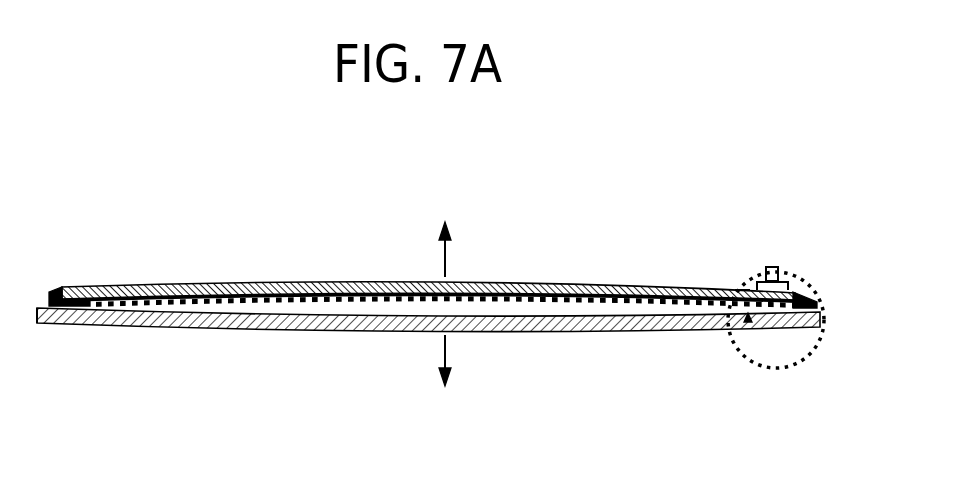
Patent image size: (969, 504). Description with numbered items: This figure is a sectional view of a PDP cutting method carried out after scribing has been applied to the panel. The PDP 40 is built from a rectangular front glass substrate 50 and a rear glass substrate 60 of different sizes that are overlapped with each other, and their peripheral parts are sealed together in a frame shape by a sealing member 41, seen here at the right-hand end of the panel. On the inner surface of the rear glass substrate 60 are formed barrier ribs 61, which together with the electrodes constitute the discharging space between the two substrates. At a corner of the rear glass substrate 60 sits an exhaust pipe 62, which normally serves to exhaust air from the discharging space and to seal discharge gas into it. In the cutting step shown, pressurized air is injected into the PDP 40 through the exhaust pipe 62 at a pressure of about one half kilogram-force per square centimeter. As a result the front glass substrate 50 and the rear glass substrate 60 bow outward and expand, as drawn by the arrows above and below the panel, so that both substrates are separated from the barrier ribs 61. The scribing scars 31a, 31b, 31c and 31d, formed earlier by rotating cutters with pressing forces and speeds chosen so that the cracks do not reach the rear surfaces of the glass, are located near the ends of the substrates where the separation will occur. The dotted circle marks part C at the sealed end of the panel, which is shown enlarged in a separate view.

The PDP 40 is at (275, 263).
The front glass substrate 50 is at (325, 330).
The rear glass substrate 60 is at (393, 282).
The barrier ribs 61 is at (517, 282).
The exhaust pipe 62 is at (777, 268).
The sealing member 41 is at (815, 297).
The scribing scar 31a is at (92, 268).
The scribing scar 31b is at (742, 288).
The scribing scar 31c is at (91, 322).
The scribing scar 31d is at (748, 318).
The part C is at (808, 357).